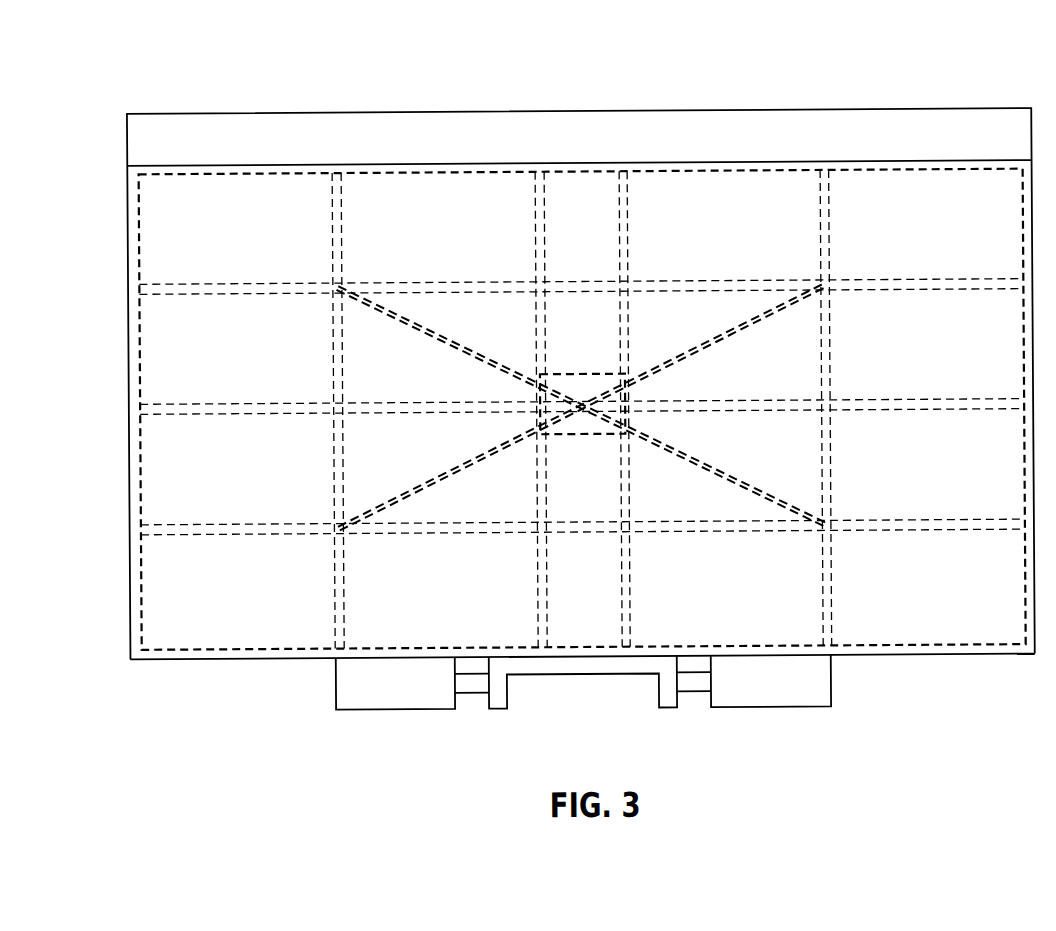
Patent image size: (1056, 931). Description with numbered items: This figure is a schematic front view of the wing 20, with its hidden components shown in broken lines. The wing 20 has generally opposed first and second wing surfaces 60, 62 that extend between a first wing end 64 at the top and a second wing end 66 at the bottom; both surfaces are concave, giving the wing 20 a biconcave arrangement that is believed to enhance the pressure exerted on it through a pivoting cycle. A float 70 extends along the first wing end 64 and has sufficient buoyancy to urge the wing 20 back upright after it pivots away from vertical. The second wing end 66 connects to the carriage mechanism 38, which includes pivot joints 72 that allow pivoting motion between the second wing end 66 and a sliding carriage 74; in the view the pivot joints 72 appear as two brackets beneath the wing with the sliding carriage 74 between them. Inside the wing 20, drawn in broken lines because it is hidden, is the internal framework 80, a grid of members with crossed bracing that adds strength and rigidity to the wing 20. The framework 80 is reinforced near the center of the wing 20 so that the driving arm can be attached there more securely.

The wing 20 is at (769, 46).
The carriage mechanism 38 is at (529, 764).
The first wing surface 60 is at (292, 368).
The second wing surface 62 is at (582, 409).
The first wing end 64 is at (191, 153).
The second wing end 66 is at (891, 657).
The float 70 is at (375, 136).
The pivot joints 72 is at (363, 695).
The sliding carriage 74 is at (530, 667).
The internal framework 80 is at (287, 533).